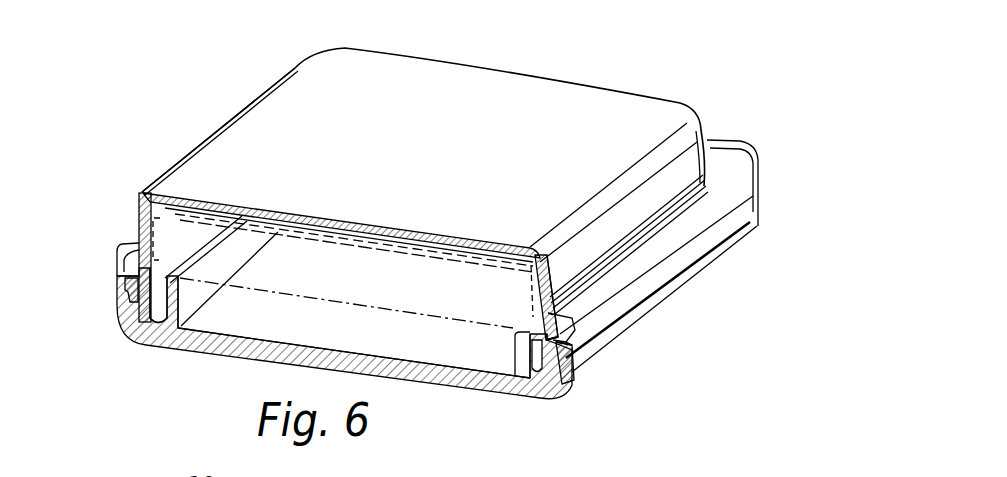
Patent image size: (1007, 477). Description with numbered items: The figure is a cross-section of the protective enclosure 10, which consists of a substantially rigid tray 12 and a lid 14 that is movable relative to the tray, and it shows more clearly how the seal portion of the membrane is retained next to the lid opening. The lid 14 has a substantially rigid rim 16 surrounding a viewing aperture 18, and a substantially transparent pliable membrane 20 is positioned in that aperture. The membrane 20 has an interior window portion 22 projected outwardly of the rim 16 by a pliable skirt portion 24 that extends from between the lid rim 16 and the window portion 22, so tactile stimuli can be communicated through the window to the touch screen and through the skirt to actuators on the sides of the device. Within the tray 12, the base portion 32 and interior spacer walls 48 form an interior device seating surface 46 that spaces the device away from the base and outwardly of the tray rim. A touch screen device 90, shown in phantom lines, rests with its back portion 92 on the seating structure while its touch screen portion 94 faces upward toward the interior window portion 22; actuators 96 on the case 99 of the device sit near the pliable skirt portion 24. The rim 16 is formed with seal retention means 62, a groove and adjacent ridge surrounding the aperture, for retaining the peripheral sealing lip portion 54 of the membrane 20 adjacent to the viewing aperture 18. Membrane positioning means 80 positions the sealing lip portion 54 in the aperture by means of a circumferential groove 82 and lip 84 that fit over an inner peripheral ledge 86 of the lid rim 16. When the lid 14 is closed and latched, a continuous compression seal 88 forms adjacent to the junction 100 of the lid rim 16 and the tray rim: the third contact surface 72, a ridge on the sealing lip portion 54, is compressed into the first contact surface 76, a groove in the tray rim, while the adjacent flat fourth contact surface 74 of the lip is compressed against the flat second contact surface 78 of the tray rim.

The protective enclosure 10 is at (212, 79).
The tray 12 is at (663, 308).
The lid 14 is at (759, 187).
The rim 16 is at (688, 250).
The viewing aperture 18 is at (548, 338).
The membrane 20 is at (587, 80).
The interior window portion 22 is at (433, 145).
The pliable skirt portion 24 is at (137, 213).
The base portion 32 is at (220, 356).
The interior device seating surface 46 is at (193, 252).
The interior spacer walls 48 is at (242, 267).
The peripheral sealing lip portion 54 is at (127, 290).
The seal retention means 62 is at (123, 268).
The membrane positioning means 80 is at (143, 247).
The lip 84 is at (632, 247).
The continuous compression seal 88 is at (133, 303).
The touch screen device 90 is at (345, 286).
The back portion 92 is at (323, 298).
The touch screen portion 94 is at (338, 233).
The actuators 96 is at (152, 230).
The case 99 is at (160, 200).
The junction 100 is at (568, 382).
The circumferential groove 82 is at (550, 314).
The inner peripheral ledge 86 is at (569, 343).
The fourth contact surface 74 is at (549, 339).
The second contact surface 78 is at (555, 337).
The third contact surface 72 is at (560, 342).
The first contact surface 76 is at (568, 344).